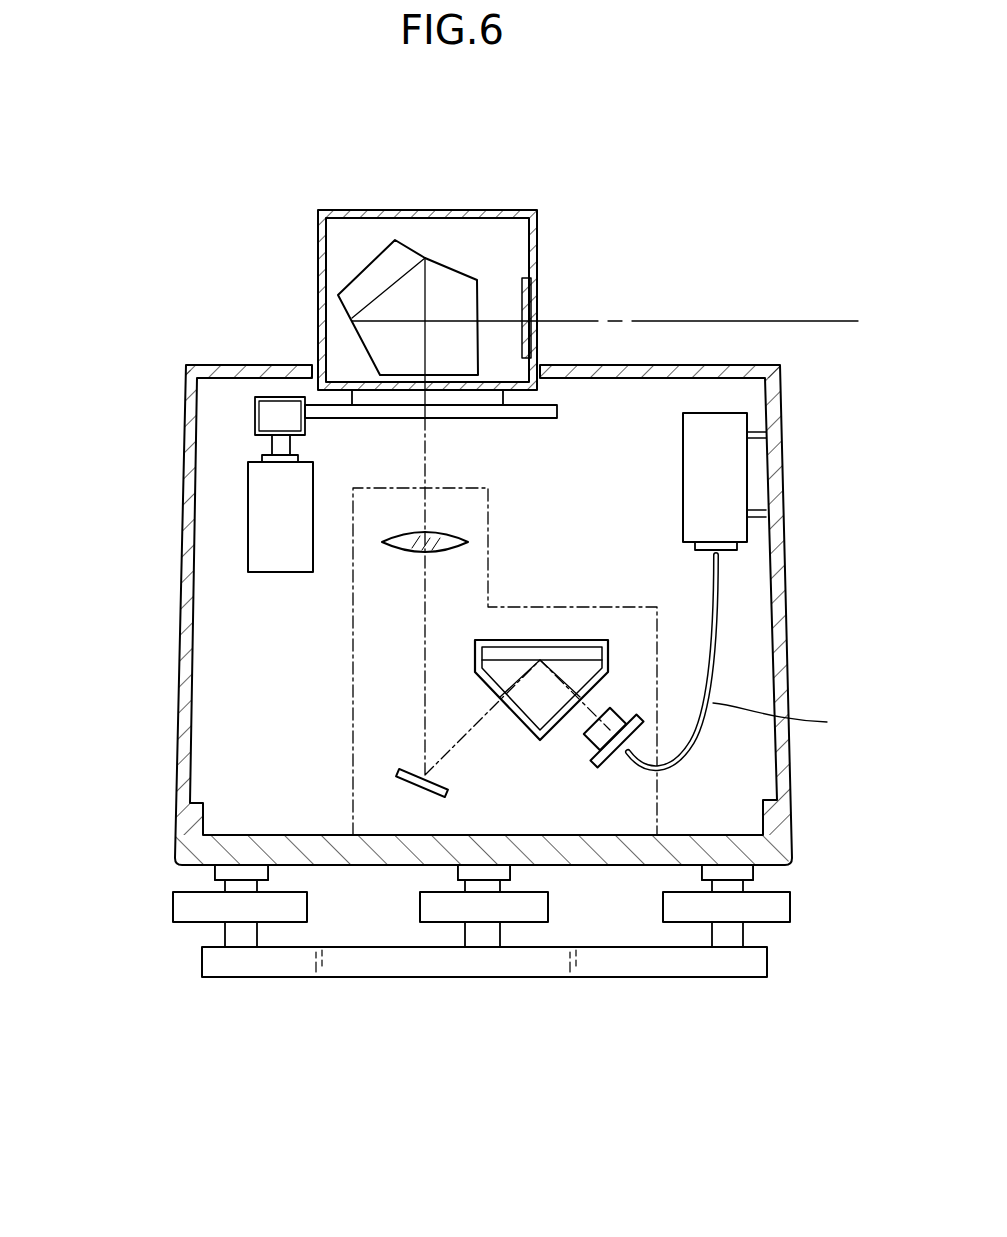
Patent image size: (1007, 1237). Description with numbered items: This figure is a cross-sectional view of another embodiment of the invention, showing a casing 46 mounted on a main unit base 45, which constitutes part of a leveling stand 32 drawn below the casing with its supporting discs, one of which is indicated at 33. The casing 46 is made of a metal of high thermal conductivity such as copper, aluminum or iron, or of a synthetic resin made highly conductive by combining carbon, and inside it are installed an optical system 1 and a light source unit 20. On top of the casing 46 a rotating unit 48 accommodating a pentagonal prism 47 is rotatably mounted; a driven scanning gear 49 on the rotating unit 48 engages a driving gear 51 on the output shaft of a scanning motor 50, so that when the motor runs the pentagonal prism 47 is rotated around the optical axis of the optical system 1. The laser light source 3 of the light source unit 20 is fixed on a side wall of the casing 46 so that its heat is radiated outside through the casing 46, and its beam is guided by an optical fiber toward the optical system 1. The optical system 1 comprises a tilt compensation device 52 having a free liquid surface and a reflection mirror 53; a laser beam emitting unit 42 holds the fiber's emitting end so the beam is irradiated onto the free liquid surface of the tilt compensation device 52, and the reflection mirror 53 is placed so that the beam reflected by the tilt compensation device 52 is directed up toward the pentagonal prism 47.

The optical system 1 is at (353, 705).
The laser light source 3 is at (783, 538).
The light source unit 20 is at (683, 600).
The leveling stand 32 is at (158, 893).
The support disk 33 is at (790, 905).
The laser beam emitting unit 42 is at (583, 748).
The main unit base 45 is at (175, 847).
The casing 46 is at (186, 572).
The pentagonal prism 47 is at (368, 262).
The rotating unit 48 is at (503, 205).
The driven scanning gear 49 is at (548, 405).
The scanning motor 50 is at (252, 504).
The driving gear 51 is at (255, 421).
The tilt compensation device 52 is at (608, 652).
The reflection mirror 53 is at (407, 778).